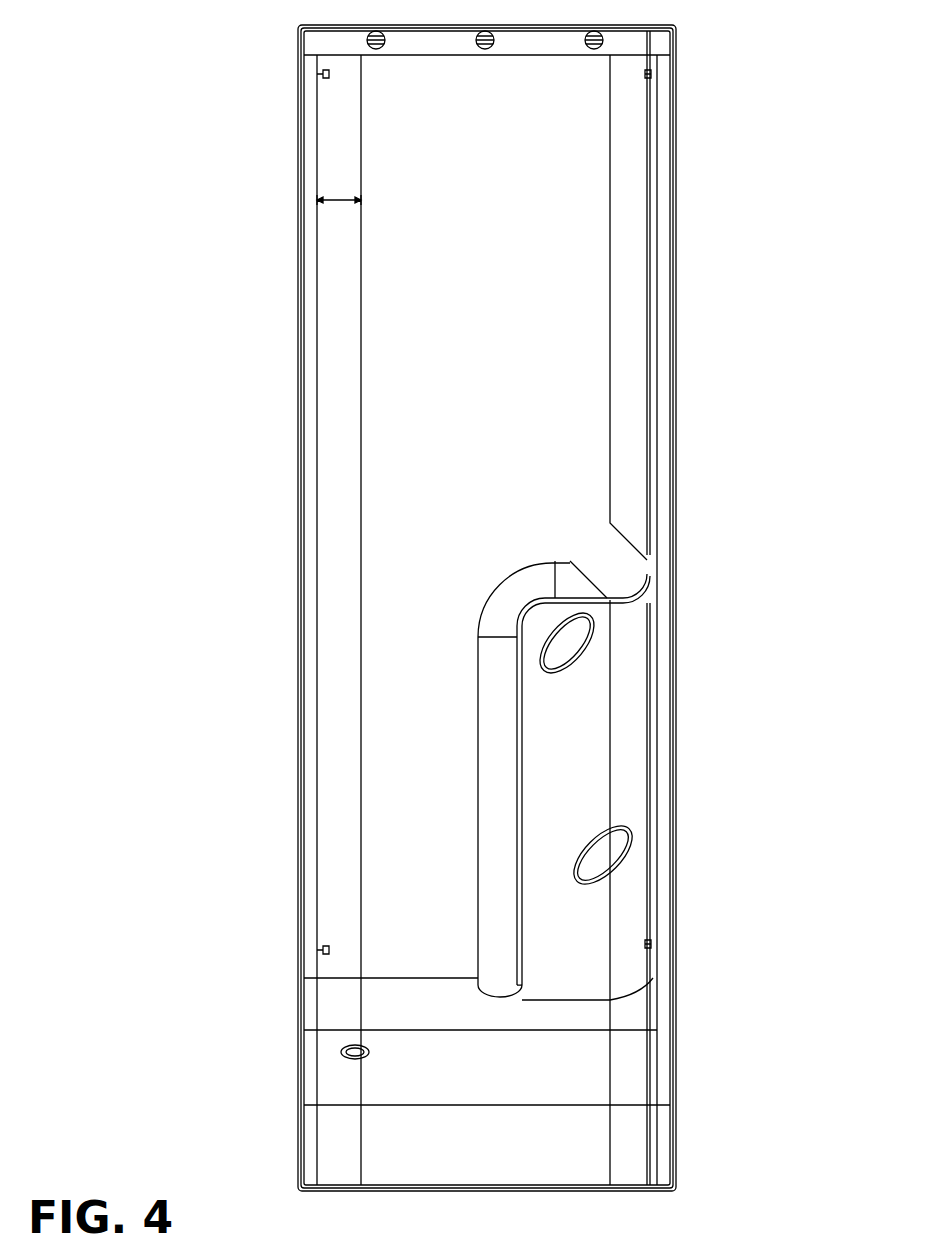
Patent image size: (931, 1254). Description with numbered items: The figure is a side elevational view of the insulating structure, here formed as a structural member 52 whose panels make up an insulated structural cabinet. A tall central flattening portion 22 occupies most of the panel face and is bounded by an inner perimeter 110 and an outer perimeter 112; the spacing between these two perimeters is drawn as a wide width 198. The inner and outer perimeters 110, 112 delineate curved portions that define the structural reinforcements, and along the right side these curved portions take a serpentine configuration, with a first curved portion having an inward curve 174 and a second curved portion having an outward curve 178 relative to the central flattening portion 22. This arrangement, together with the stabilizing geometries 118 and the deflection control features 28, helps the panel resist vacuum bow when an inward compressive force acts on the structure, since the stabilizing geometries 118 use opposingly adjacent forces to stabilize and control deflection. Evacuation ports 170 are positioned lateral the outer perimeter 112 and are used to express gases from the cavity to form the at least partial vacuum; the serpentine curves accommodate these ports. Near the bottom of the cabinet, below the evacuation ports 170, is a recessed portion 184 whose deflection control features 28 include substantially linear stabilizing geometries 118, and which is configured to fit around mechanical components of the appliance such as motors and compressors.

The structural member 52 is at (740, 75).
The central flattening portion 22 is at (490, 230).
The inner perimeter 110 is at (361, 295).
The outer perimeter 112 is at (317, 369).
The wide width 198 is at (358, 200).
The inward curve 174 is at (590, 548).
The stabilizing geometries 118 is at (622, 572).
The outward curve 178 is at (541, 613).
The evacuation ports 170 is at (585, 655).
The deflection control features 28 is at (633, 527).
The recessed portion 184 is at (524, 1074).